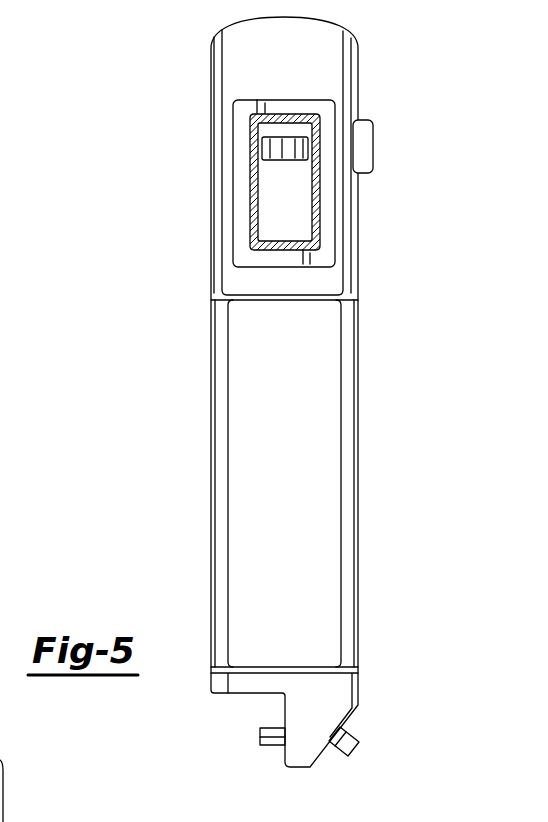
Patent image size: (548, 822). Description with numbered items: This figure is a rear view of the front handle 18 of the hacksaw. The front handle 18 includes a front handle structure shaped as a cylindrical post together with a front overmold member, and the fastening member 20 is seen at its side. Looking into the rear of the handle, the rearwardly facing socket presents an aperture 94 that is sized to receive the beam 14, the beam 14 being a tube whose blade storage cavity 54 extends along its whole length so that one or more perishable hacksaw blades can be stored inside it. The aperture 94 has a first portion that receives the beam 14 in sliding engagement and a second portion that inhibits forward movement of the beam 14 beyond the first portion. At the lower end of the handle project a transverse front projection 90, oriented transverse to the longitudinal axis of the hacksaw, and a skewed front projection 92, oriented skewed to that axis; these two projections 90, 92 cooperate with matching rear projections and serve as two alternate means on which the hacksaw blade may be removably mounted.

The beam 14 is at (315, 232).
The front handle 18 is at (198, 394).
The fastening member 20 is at (367, 138).
The blade storage cavity 54 is at (263, 221).
The transverse front projection 90 is at (270, 728).
The skewed front projection 92 is at (352, 737).
The aperture 94 is at (139, 811).